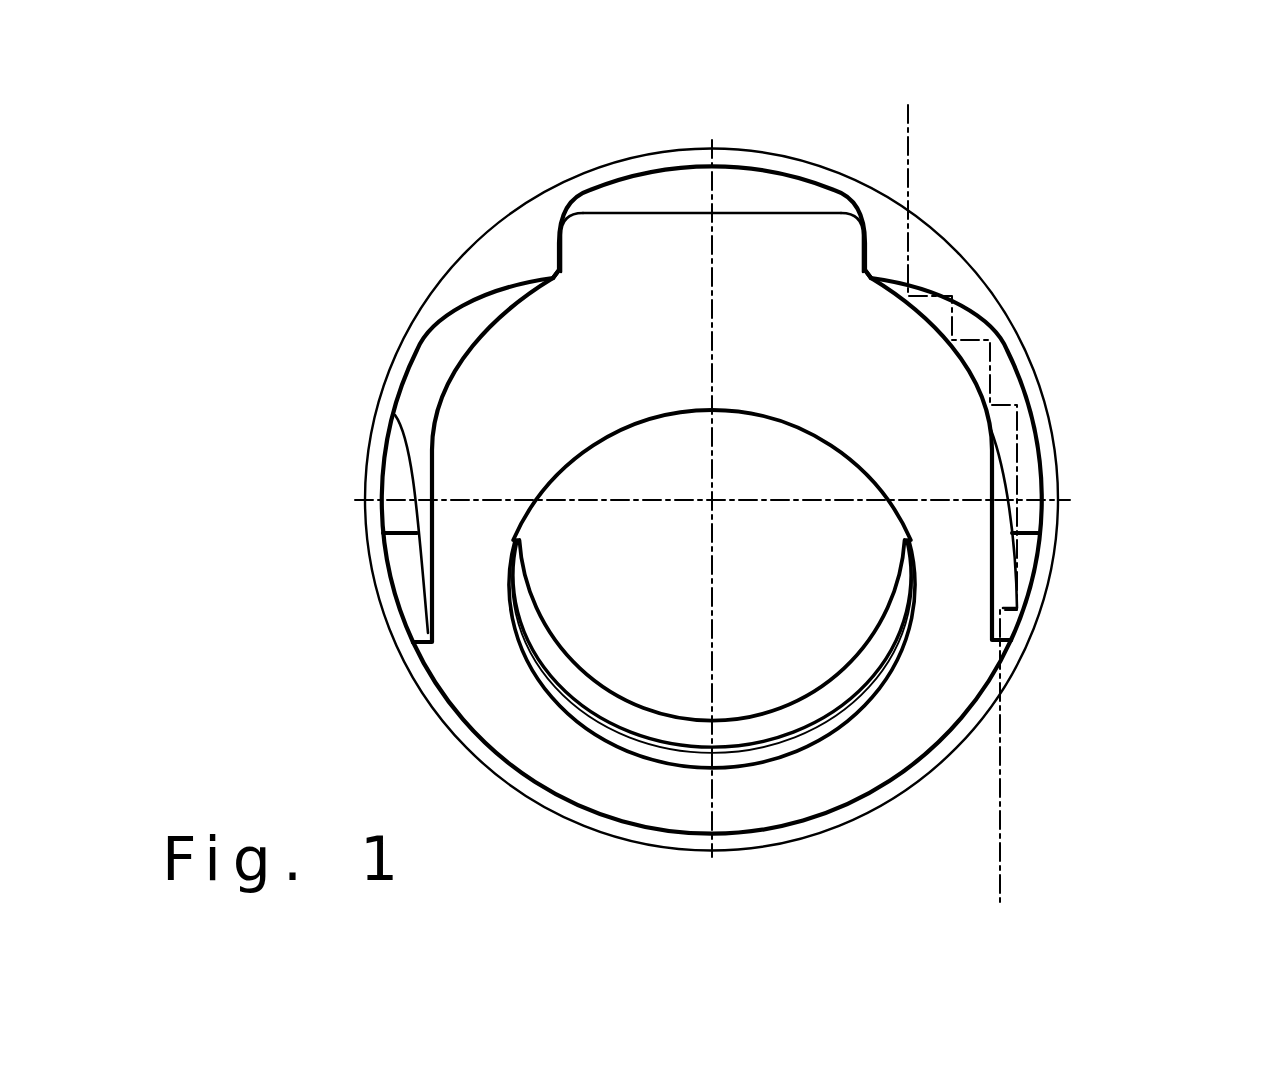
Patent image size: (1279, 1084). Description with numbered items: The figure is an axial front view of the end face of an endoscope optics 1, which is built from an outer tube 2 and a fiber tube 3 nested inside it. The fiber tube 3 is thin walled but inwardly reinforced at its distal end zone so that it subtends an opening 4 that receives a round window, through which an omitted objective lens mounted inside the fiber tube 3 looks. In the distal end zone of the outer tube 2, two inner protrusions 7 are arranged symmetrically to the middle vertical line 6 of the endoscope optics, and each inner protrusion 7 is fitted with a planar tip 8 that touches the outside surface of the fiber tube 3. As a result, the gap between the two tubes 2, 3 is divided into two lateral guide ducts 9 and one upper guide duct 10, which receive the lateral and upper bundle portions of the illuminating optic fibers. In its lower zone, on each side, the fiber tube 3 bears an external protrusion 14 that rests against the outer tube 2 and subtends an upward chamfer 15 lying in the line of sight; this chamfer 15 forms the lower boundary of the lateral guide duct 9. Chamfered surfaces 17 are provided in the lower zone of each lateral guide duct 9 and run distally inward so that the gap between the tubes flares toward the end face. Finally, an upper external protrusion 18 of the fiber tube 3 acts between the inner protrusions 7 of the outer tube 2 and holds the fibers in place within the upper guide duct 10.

The endoscope optics 1 is at (413, 187).
The outer tube 2 is at (375, 442).
The fiber tube 3 is at (510, 735).
The opening 4 is at (728, 760).
The middle vertical line 6 is at (713, 274).
The inner protrusions 7 is at (537, 230).
The planar tip 8 is at (553, 278).
The lateral guide ducts 9 is at (437, 350).
The upper guide duct 10 is at (617, 202).
The external protrusion 14 is at (455, 667).
The chamfer 15 is at (402, 573).
The chamfered surfaces 17 is at (425, 490).
The upper external protrusion 18 is at (674, 242).